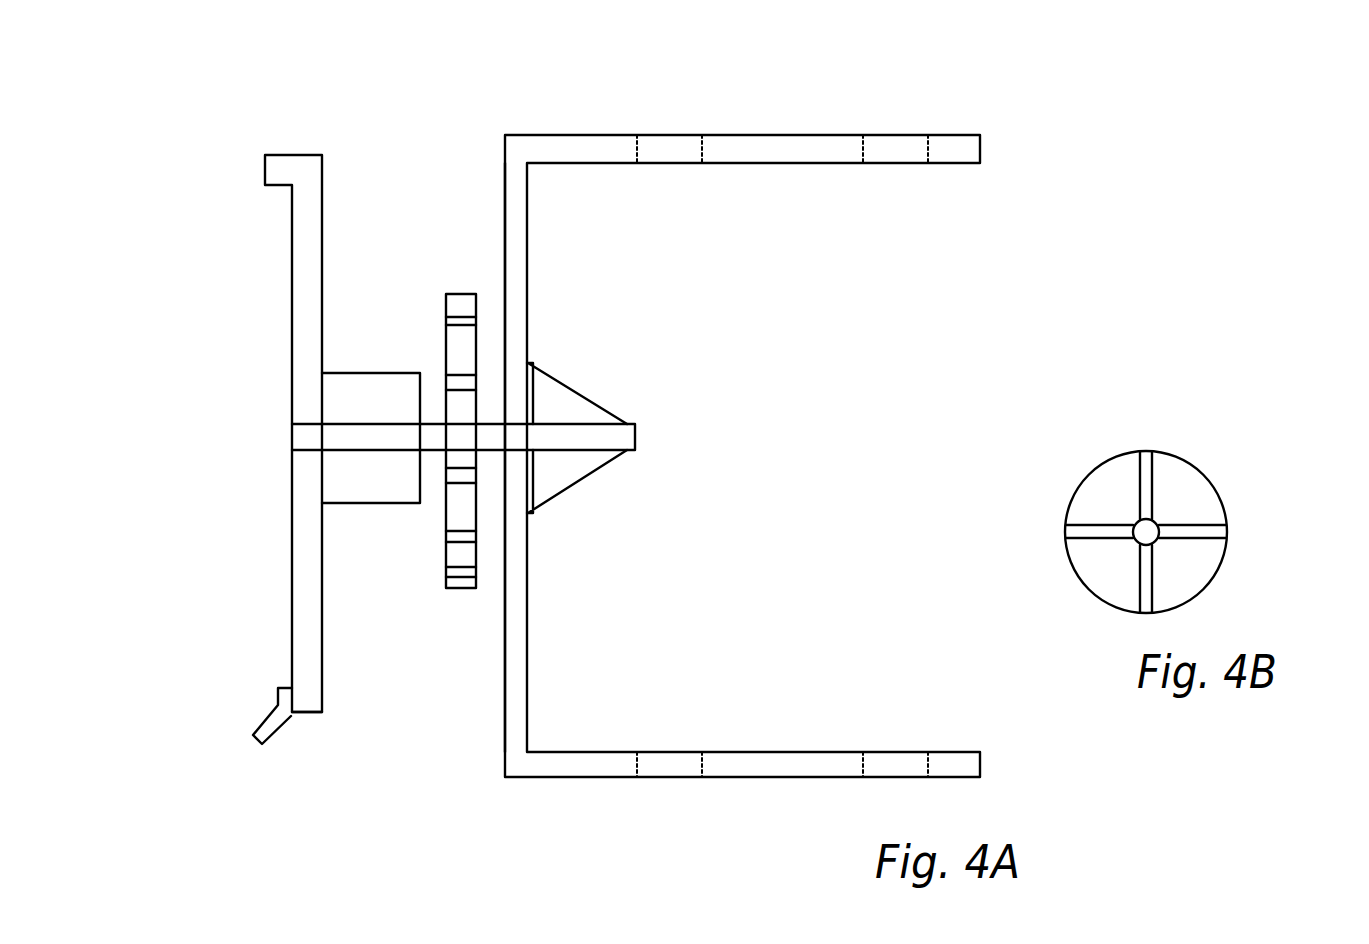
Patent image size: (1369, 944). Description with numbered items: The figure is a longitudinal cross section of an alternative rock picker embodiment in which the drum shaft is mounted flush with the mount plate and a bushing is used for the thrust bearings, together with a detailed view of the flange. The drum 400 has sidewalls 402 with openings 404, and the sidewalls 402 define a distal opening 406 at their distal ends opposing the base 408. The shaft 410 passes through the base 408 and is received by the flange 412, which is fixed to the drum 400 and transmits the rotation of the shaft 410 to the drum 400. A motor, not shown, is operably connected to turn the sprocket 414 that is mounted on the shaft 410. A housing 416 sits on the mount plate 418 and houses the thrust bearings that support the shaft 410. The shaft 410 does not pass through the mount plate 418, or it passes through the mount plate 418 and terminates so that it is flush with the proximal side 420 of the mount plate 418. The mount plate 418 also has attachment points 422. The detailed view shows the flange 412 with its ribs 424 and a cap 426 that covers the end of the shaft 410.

In FIG. 4A, the drum 400 is at (1045, 152).
In FIG. 4A, the sidewalls 402 is at (957, 147).
In FIG. 4A, the openings 404 is at (658, 148).
In FIG. 4A, the distal opening 406 is at (1035, 325).
In FIG. 4A, the base 408 is at (515, 271).
In FIG. 4A, the shaft 410 is at (491, 433).
In FIG. 4A, the flange 412 is at (624, 438).
In FIG. 4B, the flange 412 is at (1172, 473).
In FIG. 4A, the sprocket 414 is at (463, 590).
In FIG. 4A, the housing 416 is at (374, 503).
In FIG. 4A, the mount plate 418 is at (308, 712).
In FIG. 4A, the proximal side 420 is at (292, 513).
In FIG. 4A, the attachment points 422 is at (265, 170).
In FIG. 4B, the ribs 424 is at (1146, 460).
In FIG. 4B, the cap 426 is at (1155, 524).